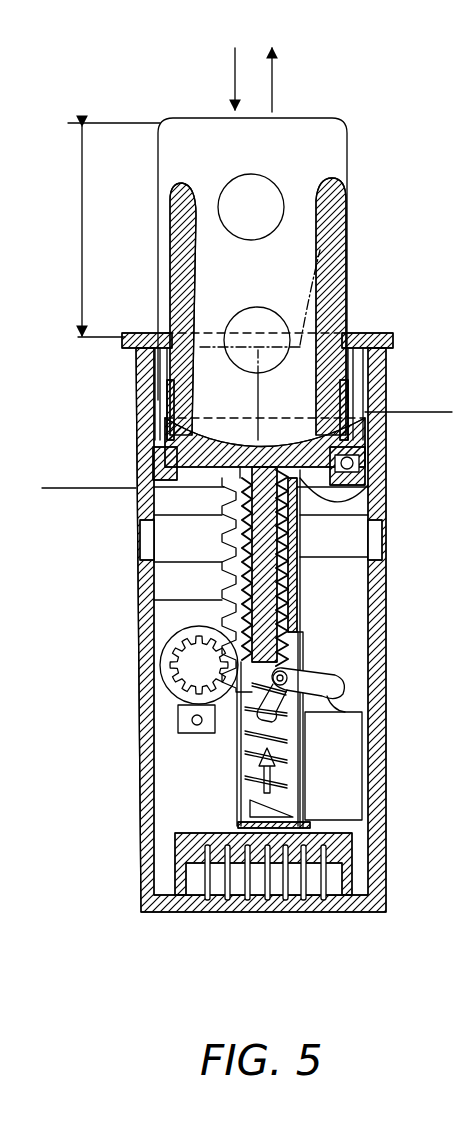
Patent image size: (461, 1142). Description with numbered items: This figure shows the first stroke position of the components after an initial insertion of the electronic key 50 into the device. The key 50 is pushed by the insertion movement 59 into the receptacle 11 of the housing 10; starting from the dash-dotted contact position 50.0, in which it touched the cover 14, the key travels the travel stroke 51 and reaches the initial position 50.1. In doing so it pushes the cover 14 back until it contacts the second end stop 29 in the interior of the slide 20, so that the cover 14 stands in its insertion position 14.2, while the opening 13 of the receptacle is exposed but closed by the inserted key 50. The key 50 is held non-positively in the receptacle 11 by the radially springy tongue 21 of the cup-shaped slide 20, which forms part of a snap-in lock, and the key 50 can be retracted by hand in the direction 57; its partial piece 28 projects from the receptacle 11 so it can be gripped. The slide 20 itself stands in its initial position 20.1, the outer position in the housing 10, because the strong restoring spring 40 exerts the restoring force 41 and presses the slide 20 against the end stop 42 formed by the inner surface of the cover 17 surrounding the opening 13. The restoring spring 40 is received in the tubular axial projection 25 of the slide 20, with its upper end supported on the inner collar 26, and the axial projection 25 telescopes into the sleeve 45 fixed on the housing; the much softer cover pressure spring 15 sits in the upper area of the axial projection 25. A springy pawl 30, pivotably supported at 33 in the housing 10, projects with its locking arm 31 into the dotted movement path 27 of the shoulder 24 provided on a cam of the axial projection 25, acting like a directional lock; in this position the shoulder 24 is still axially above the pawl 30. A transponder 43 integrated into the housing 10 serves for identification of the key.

The housing 10 is at (132, 882).
The receptacle 11 is at (156, 383).
The opening 13 is at (350, 322).
The cover 14 is at (378, 448).
The insertion position 14.2 is at (422, 412).
The cover pressure spring 15 is at (238, 494).
The cover 17 is at (124, 338).
The slide 20 is at (152, 447).
The initial position 20.1 is at (112, 488).
The tongue 21 is at (153, 378).
The shoulder 24 is at (240, 600).
The axial projection 25 is at (300, 580).
The inner collar 26 is at (287, 550).
The movement path 27 is at (225, 618).
The partial piece 28 is at (82, 212).
The second end stop 29 is at (368, 500).
The pawl 30 is at (338, 668).
The locking arm 31 is at (255, 730).
The pivot support 33 is at (300, 672).
The restoring spring 40 is at (250, 800).
The restoring force 41 is at (281, 775).
The end stop 42 is at (157, 340).
The transponder 43 is at (146, 548).
The sleeve 45 is at (250, 777).
The key 50 is at (350, 113).
The contact position 50.0 is at (350, 256).
The initial position 50.1 is at (258, 440).
The travel stroke 51 is at (262, 381).
The retraction direction 57 is at (273, 82).
The insertion movement 59 is at (234, 62).